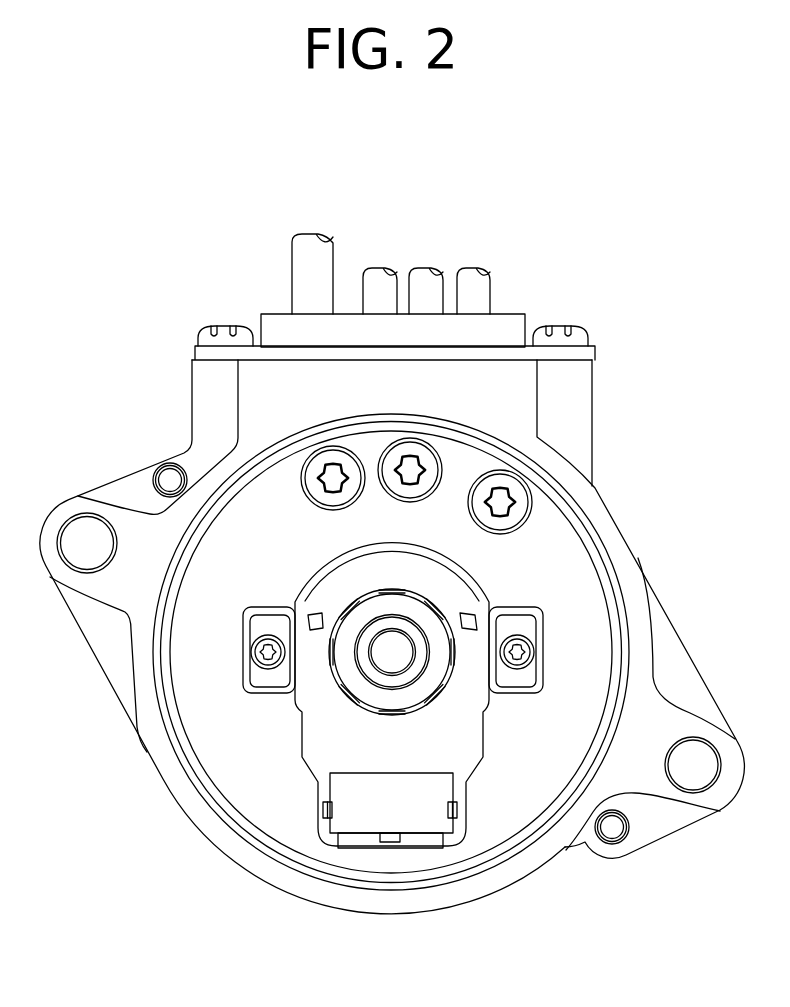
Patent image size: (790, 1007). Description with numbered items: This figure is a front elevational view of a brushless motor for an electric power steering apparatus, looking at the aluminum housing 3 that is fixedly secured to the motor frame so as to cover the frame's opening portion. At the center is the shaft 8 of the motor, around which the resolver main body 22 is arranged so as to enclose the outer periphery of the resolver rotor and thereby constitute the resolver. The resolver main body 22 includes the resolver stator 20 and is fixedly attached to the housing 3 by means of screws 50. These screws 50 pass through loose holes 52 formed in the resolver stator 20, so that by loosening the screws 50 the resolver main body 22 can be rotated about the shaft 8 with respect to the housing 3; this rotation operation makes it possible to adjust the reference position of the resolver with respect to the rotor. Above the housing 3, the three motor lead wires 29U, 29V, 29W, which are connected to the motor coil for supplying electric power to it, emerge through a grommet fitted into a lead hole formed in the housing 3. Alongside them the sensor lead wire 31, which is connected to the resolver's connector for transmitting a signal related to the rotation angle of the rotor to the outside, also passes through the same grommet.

The housing 3 is at (585, 683).
The shaft 8 is at (392, 660).
The resolver stator 20 is at (470, 580).
The resolver main body 22 is at (467, 737).
The motor lead wire 29U is at (477, 283).
The motor lead wire 29V is at (432, 293).
The motor lead wire 29W is at (382, 293).
The sensor lead wire 31 is at (312, 273).
The screws 50 is at (258, 662).
The loose holes 52 is at (255, 650).